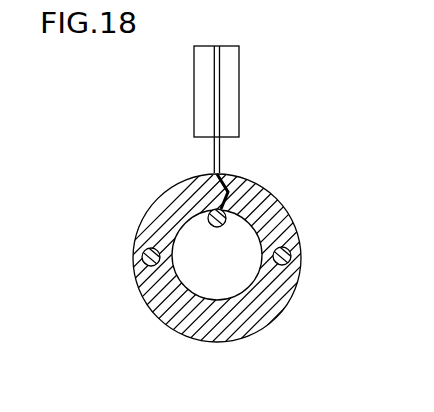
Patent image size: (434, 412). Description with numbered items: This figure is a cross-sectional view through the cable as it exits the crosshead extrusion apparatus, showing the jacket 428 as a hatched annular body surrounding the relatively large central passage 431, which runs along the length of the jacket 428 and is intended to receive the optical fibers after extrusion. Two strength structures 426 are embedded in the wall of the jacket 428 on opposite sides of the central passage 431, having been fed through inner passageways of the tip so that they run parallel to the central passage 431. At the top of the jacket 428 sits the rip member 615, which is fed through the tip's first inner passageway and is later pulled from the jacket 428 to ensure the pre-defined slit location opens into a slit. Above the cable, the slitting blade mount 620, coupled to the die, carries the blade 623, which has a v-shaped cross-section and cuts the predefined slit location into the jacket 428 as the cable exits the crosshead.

The slitting blade mount 620 is at (239, 70).
The blade 623 is at (217, 153).
The rip member 615 is at (225, 212).
The strength structures 426 is at (145, 262).
The jacket 428 is at (280, 307).
The central passage 431 is at (202, 303).